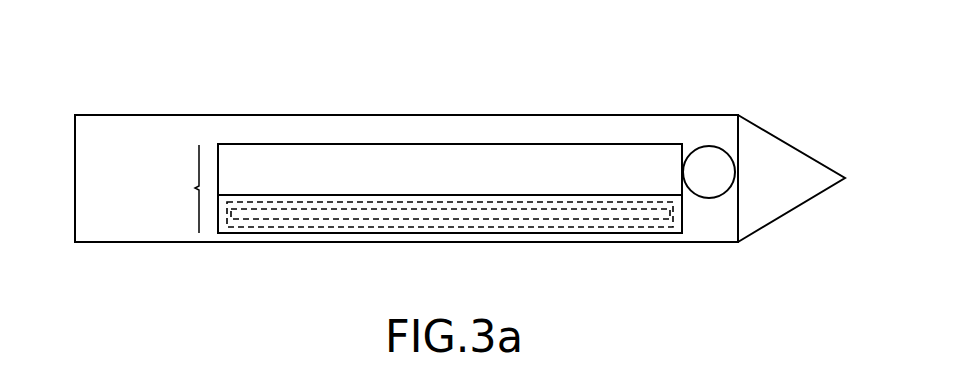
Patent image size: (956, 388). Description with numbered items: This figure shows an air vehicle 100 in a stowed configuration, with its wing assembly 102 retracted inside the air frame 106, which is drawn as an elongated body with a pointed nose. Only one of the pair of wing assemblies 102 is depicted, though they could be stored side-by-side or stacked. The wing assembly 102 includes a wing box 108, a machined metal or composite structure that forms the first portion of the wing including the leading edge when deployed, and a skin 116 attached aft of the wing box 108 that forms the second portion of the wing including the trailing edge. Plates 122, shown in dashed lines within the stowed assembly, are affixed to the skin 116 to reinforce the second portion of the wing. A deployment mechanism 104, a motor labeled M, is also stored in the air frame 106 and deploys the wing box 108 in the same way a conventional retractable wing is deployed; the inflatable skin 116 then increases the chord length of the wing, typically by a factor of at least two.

The air vehicle 100 is at (146, 74).
The wing assembly 102 is at (176, 189).
The deployment mechanism 104 is at (700, 146).
The air frame 106 is at (306, 115).
The wing box 108 is at (496, 158).
The skin 116 is at (221, 237).
The plates 122 is at (372, 205).